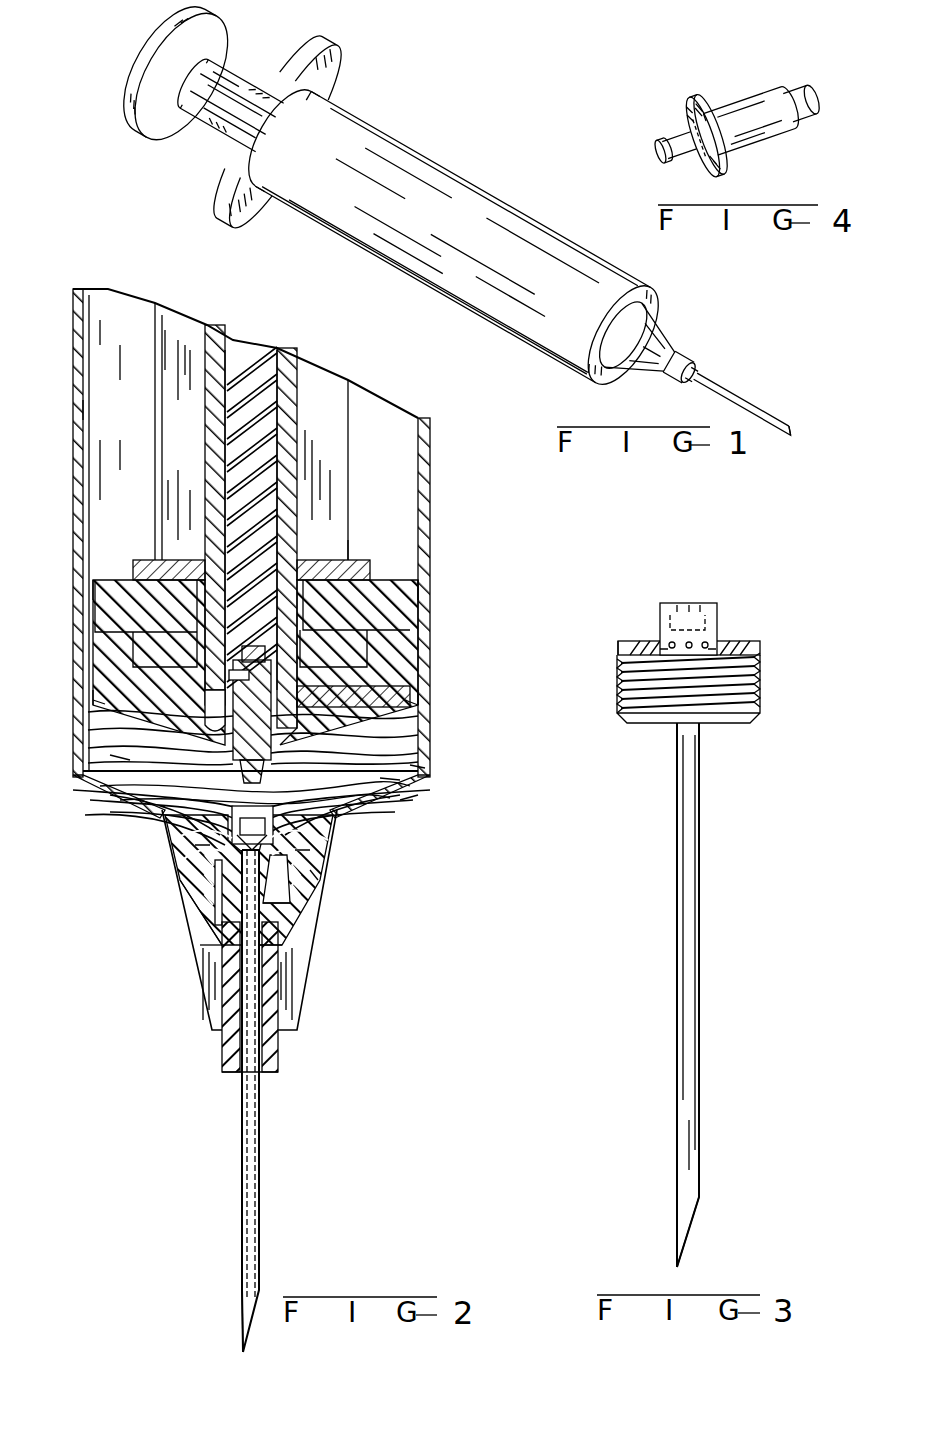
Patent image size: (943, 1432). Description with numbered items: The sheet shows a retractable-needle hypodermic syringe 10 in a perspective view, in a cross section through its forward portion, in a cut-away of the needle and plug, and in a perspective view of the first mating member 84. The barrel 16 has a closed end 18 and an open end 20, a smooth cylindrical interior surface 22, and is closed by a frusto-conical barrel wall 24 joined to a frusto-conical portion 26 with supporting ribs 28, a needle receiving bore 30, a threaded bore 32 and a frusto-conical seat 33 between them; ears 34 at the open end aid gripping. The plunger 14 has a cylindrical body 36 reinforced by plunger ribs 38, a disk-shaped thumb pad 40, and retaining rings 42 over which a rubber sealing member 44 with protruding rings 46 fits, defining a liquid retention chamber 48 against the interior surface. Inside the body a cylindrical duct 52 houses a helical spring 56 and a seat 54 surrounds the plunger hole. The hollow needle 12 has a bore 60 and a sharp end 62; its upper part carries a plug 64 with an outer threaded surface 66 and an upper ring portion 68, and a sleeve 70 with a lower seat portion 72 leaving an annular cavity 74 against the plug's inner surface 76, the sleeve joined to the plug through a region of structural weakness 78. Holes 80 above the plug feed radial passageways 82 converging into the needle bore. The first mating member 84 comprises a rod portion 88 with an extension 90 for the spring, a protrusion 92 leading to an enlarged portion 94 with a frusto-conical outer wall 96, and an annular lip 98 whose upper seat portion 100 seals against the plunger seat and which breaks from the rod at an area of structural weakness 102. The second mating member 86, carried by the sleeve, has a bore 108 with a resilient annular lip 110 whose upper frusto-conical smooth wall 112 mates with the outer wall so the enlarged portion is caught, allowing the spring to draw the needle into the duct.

In FIG. 1, the hypodermic syringe 10 is at (468, 153).
In FIG. 2, the hypodermic syringe 10 is at (416, 855).
In FIG. 1, the hollow needle 12 is at (755, 412).
In FIG. 2, the hollow needle 12 is at (261, 1128).
In FIG. 3, the hollow needle 12 is at (701, 892).
In FIG. 1, the plunger 14 is at (264, 64).
In FIG. 2, the plunger 14 is at (386, 545).
In FIG. 1, the barrel 16 is at (399, 257).
In FIG. 2, the barrel 16 is at (72, 528).
In FIG. 1, the closed end 18 is at (667, 303).
In FIG. 2, the closed end 18 is at (117, 822).
In FIG. 1, the open end 20 is at (214, 164).
In FIG. 2, the interior surface 22 is at (85, 425).
In FIG. 1, the barrel wall 24 is at (619, 378).
In FIG. 2, the barrel wall 24 is at (400, 796).
In FIG. 1, the frusto-conical portion 26 is at (696, 358).
In FIG. 2, the frusto-conical portion 26 is at (205, 984).
In FIG. 1, the supporting ribs 28 is at (668, 352).
In FIG. 2, the supporting ribs 28 is at (206, 998).
In FIG. 1, the needle receiving bore 30 is at (702, 369).
In FIG. 2, the needle receiving bore 30 is at (246, 1080).
In FIG. 2, the threaded bore 32 is at (300, 882).
In FIG. 2, the seat 33 is at (275, 937).
In FIG. 1, the ears 34 is at (340, 80).
In FIG. 1, the cylindrical body 36 is at (196, 122).
In FIG. 2, the cylindrical body 36 is at (205, 452).
In FIG. 1, the plunger ribs 38 is at (230, 80).
In FIG. 2, the plunger ribs 38 is at (180, 330).
In FIG. 1, the thumb pad 40 is at (176, 40).
In FIG. 2, the retaining rings 42 is at (147, 559).
In FIG. 2, the rubber sealing member 44 is at (93, 645).
In FIG. 2, the rubber protruding rings 46 is at (96, 586).
In FIG. 2, the liquid retention chamber 48 is at (420, 748).
In FIG. 2, the duct 52 is at (268, 437).
In FIG. 2, the seat 54 is at (290, 728).
In FIG. 2, the helical spring 56 is at (258, 356).
In FIG. 2, the bore 60 is at (250, 1150).
In FIG. 1, the sharp end 62 is at (793, 429).
In FIG. 2, the sharp end 62 is at (252, 1318).
In FIG. 3, the sharp end 62 is at (692, 1222).
In FIG. 2, the plug 64 is at (215, 892).
In FIG. 3, the plug 64 is at (764, 648).
In FIG. 2, the outer threaded surface 66 is at (292, 890).
In FIG. 3, the outer threaded surface 66 is at (762, 690).
In FIG. 2, the upper ring portion 68 is at (212, 860).
In FIG. 3, the upper ring portion 68 is at (622, 648).
In FIG. 2, the sleeve 70 is at (188, 948).
In FIG. 2, the lower seat portion 72 is at (275, 916).
In FIG. 2, the annular cavity 74 is at (272, 900).
In FIG. 2, the inner surface 76 is at (215, 922).
In FIG. 2, the region of structural weakness 78 is at (215, 872).
In FIG. 3, the region of structural weakness 78 is at (660, 648).
In FIG. 2, the holes 80 is at (200, 842).
In FIG. 3, the holes 80 is at (671, 641).
In FIG. 2, the passageways 82 is at (190, 826).
In FIG. 4, the first mating member 84 is at (774, 138).
In FIG. 2, the first mating member 84 is at (425, 768).
In FIG. 2, the second mating member 86 is at (336, 810).
In FIG. 3, the second mating member 86 is at (668, 640).
In FIG. 4, the rod portion 88 is at (748, 95).
In FIG. 2, the rod portion 88 is at (240, 690).
In FIG. 4, the extension 90 is at (792, 88).
In FIG. 2, the extension 90 is at (266, 652).
In FIG. 4, the protrusion 92 is at (689, 156).
In FIG. 2, the protrusion 92 is at (120, 760).
In FIG. 4, the enlarged portion 94 is at (660, 158).
In FIG. 2, the enlarged portion 94 is at (400, 780).
In FIG. 4, the outer wall 96 is at (667, 140).
In FIG. 2, the outer wall 96 is at (110, 790).
In FIG. 4, the annular lip 98 is at (696, 100).
In FIG. 2, the annular lip 98 is at (400, 745).
In FIG. 2, the upper seat portion 100 is at (213, 716).
In FIG. 4, the area of structural weakness 102 is at (684, 108).
In FIG. 2, the area of structural weakness 102 is at (92, 738).
In FIG. 2, the bore 108 is at (172, 812).
In FIG. 3, the bore 108 is at (700, 605).
In FIG. 2, the annular lip 110 is at (362, 795).
In FIG. 3, the annular lip 110 is at (677, 605).
In FIG. 2, the upper frusto-conical smooth wall 112 is at (165, 812).
In FIG. 3, the upper frusto-conical smooth wall 112 is at (689, 605).